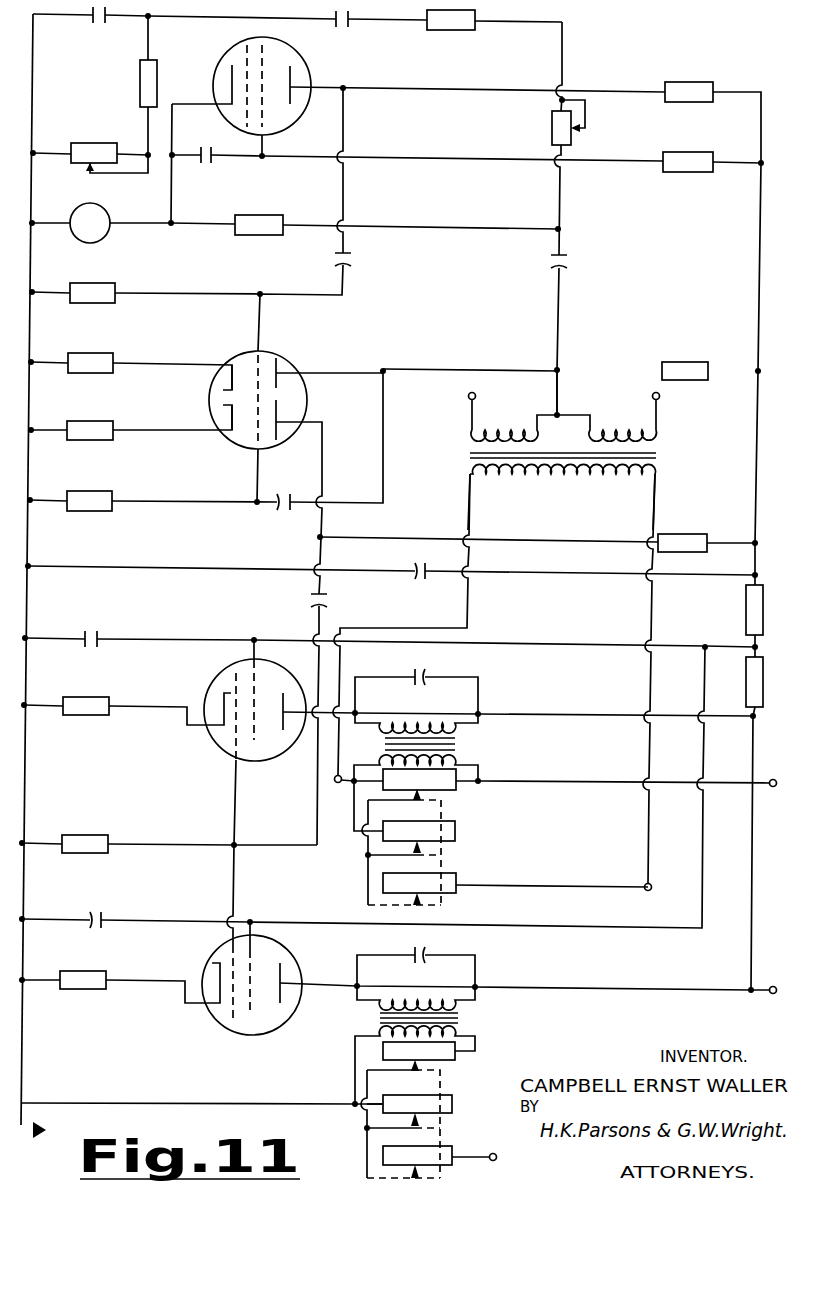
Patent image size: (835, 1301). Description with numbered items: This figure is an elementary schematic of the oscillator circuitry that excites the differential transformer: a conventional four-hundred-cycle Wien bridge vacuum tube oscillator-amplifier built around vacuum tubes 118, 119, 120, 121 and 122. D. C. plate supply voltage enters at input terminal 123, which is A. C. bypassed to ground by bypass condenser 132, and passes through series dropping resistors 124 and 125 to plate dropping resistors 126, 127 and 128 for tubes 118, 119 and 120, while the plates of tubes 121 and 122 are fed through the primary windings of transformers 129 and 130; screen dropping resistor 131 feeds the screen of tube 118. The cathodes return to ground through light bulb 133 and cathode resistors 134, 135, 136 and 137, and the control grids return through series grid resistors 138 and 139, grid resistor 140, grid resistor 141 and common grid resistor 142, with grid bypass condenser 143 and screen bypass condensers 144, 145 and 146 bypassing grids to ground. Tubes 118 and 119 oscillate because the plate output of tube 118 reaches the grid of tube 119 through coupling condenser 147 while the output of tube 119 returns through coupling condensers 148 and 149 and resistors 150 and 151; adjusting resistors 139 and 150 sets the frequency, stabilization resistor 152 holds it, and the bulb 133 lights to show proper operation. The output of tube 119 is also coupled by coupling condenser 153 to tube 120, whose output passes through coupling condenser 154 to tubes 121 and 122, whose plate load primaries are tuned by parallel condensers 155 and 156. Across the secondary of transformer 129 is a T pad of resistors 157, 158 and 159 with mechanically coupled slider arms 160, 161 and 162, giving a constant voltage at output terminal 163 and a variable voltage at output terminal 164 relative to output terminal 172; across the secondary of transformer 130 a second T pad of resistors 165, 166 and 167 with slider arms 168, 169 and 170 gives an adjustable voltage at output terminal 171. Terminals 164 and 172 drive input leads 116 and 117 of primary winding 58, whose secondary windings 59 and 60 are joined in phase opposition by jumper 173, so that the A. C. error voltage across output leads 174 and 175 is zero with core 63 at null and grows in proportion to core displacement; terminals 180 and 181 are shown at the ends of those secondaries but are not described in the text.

The primary winding 58 is at (540, 476).
The secondary winding 59 is at (510, 432).
The secondary winding 60 is at (615, 436).
The core 63 is at (468, 455).
The input lead 116 is at (469, 496).
The input lead 117 is at (658, 489).
The vacuum tube 118 is at (288, 130).
The vacuum tube 119 is at (237, 356).
The vacuum tube 120 is at (230, 443).
The vacuum tube 121 is at (214, 680).
The vacuum tube 122 is at (223, 1032).
The input terminal 123 is at (777, 994).
The series dropping resistor 124 is at (758, 707).
The series dropping resistor 125 is at (746, 610).
The plate dropping resistor 126 is at (686, 82).
The plate dropping resistor 127 is at (678, 362).
The plate dropping resistor 128 is at (678, 534).
The transformer 129 is at (465, 742).
The transformer 130 is at (462, 1018).
The screen dropping resistor 131 is at (688, 142).
The bypass condenser 132 is at (415, 586).
The light bulb 133 is at (86, 244).
The cathode resistor 134 is at (68, 375).
The cathode resistor 135 is at (67, 443).
The cathode resistor 136 is at (64, 718).
The cathode resistor 137 is at (61, 993).
The grid resistor 138 is at (139, 83).
The grid resistor 139 is at (90, 143).
The grid resistor 140 is at (70, 305).
The grid resistor 141 is at (66, 514).
The common grid resistor 142 is at (63, 857).
The grid bypass condenser 143 is at (89, 16).
The screen bypass condenser 144 is at (196, 160).
The screen bypass condenser 145 is at (90, 649).
The screen bypass condenser 146 is at (96, 931).
The coupling condenser 147 is at (354, 264).
The coupling condenser 148 is at (574, 263).
The coupling condenser 149 is at (337, 26).
The resistor 150 is at (552, 127).
The resistor 151 is at (444, 31).
The stabilization resistor 152 is at (239, 243).
The coupling condenser 153 is at (277, 511).
The coupling condenser 154 is at (326, 602).
The condenser 155 is at (424, 672).
The condenser 156 is at (416, 965).
The resistor 157 is at (458, 792).
The resistor 158 is at (455, 831).
The resistor 159 is at (458, 893).
The slider arm 160 is at (441, 802).
The slider arm 161 is at (441, 856).
The slider arm 162 is at (441, 907).
The output terminal 163 is at (773, 787).
The output terminal 164 is at (646, 891).
The resistor 165 is at (455, 1055).
The resistor 166 is at (452, 1106).
The resistor 167 is at (454, 1150).
The slider arm 168 is at (440, 1072).
The slider arm 169 is at (440, 1124).
The slider arm 170 is at (440, 1172).
The output terminal 171 is at (497, 1157).
The output terminal 172 is at (336, 784).
The jumper 173 is at (561, 395).
The output lead 174 is at (471, 420).
The output lead 175 is at (657, 420).
The terminal 180 is at (468, 395).
The terminal 181 is at (660, 397).